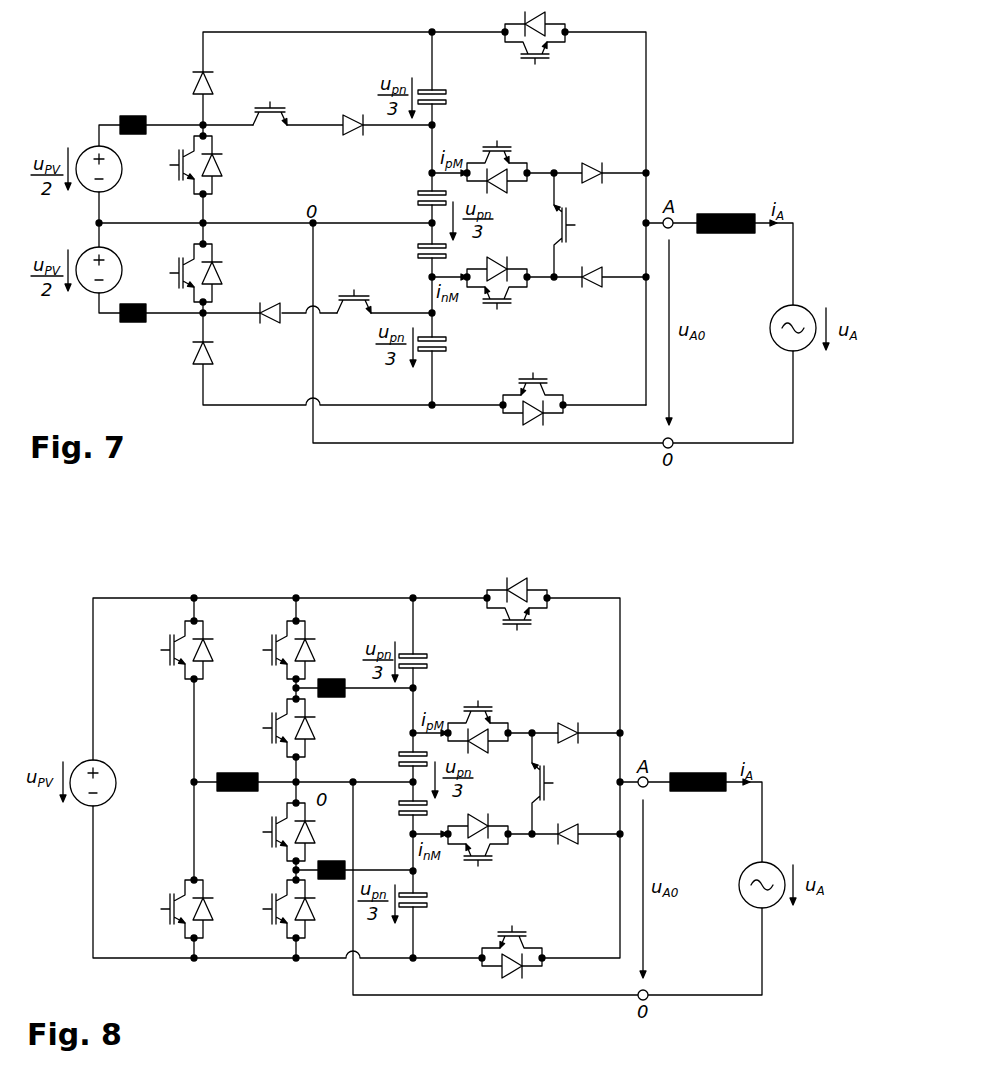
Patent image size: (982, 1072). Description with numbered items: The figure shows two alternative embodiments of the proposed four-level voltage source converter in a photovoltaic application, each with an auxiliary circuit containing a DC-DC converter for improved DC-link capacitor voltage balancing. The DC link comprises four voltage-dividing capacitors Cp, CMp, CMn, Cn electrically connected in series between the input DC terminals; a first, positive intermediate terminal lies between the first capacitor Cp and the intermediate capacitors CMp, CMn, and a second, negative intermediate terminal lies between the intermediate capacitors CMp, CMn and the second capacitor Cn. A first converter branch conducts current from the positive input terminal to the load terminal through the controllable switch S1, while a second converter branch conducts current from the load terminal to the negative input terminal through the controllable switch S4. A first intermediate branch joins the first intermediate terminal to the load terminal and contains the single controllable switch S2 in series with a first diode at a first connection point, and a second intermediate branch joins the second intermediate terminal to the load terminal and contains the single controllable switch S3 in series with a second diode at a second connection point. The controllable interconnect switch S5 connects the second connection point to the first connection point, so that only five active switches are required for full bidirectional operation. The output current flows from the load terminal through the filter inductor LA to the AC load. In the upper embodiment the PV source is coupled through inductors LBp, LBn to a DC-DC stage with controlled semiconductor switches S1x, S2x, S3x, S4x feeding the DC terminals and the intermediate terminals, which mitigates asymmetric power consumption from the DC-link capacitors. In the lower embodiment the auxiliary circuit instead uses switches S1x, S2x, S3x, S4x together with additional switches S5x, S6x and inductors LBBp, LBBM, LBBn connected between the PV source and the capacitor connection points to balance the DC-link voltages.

In FIG. 7, the controllable switch S1 is at (535, 55).
In FIG. 8, the controllable switch S1 is at (517, 620).
In FIG. 7, the controllable switch S2 is at (497, 153).
In FIG. 8, the controllable switch S2 is at (478, 714).
In FIG. 7, the controllable switch S3 is at (497, 297).
In FIG. 8, the controllable switch S3 is at (478, 853).
In FIG. 7, the controllable switch S4 is at (533, 387).
In FIG. 8, the controllable switch S4 is at (512, 942).
In FIG. 7, the controllable interconnect switch S5 is at (580, 225).
In FIG. 8, the controllable interconnect switch S5 is at (557, 783).
In FIG. 7, the controlled semiconductor switch S1x is at (270, 100).
In FIG. 8, the controlled semiconductor switch S1x is at (277, 650).
In FIG. 7, the controlled semiconductor switch S2x is at (353, 288).
In FIG. 8, the controlled semiconductor switch S2x is at (277, 728).
In FIG. 7, the controlled semiconductor switch S3x is at (185, 165).
In FIG. 8, the controlled semiconductor switch S3x is at (277, 832).
In FIG. 7, the controlled semiconductor switch S4x is at (185, 273).
In FIG. 8, the controlled semiconductor switch S4x is at (277, 909).
In FIG. 8, the buck-boost converter switch S5x is at (175, 650).
In FIG. 8, the buck-boost converter switch S6x is at (175, 909).
In FIG. 7, the first capacitor Cp is at (447, 99).
In FIG. 8, the first capacitor Cp is at (430, 664).
In FIG. 7, the intermediate capacitor CMp is at (411, 198).
In FIG. 8, the intermediate capacitor CMp is at (392, 758).
In FIG. 7, the intermediate capacitor CMn is at (411, 249).
In FIG. 8, the intermediate capacitor CMn is at (392, 809).
In FIG. 7, the second capacitor Cn is at (446, 348).
In FIG. 8, the second capacitor Cn is at (427, 903).
In FIG. 7, the positive boost inductor LBp is at (132, 112).
In FIG. 7, the negative boost inductor LBn is at (130, 326).
In FIG. 8, the positive buck-boost inductor LBBp is at (333, 677).
In FIG. 8, the middle buck-boost inductor LBBM is at (236, 771).
In FIG. 8, the negative buck-boost inductor LBBn is at (330, 859).
In FIG. 7, the output filter inductor LA is at (726, 212).
In FIG. 8, the output filter inductor LA is at (698, 771).